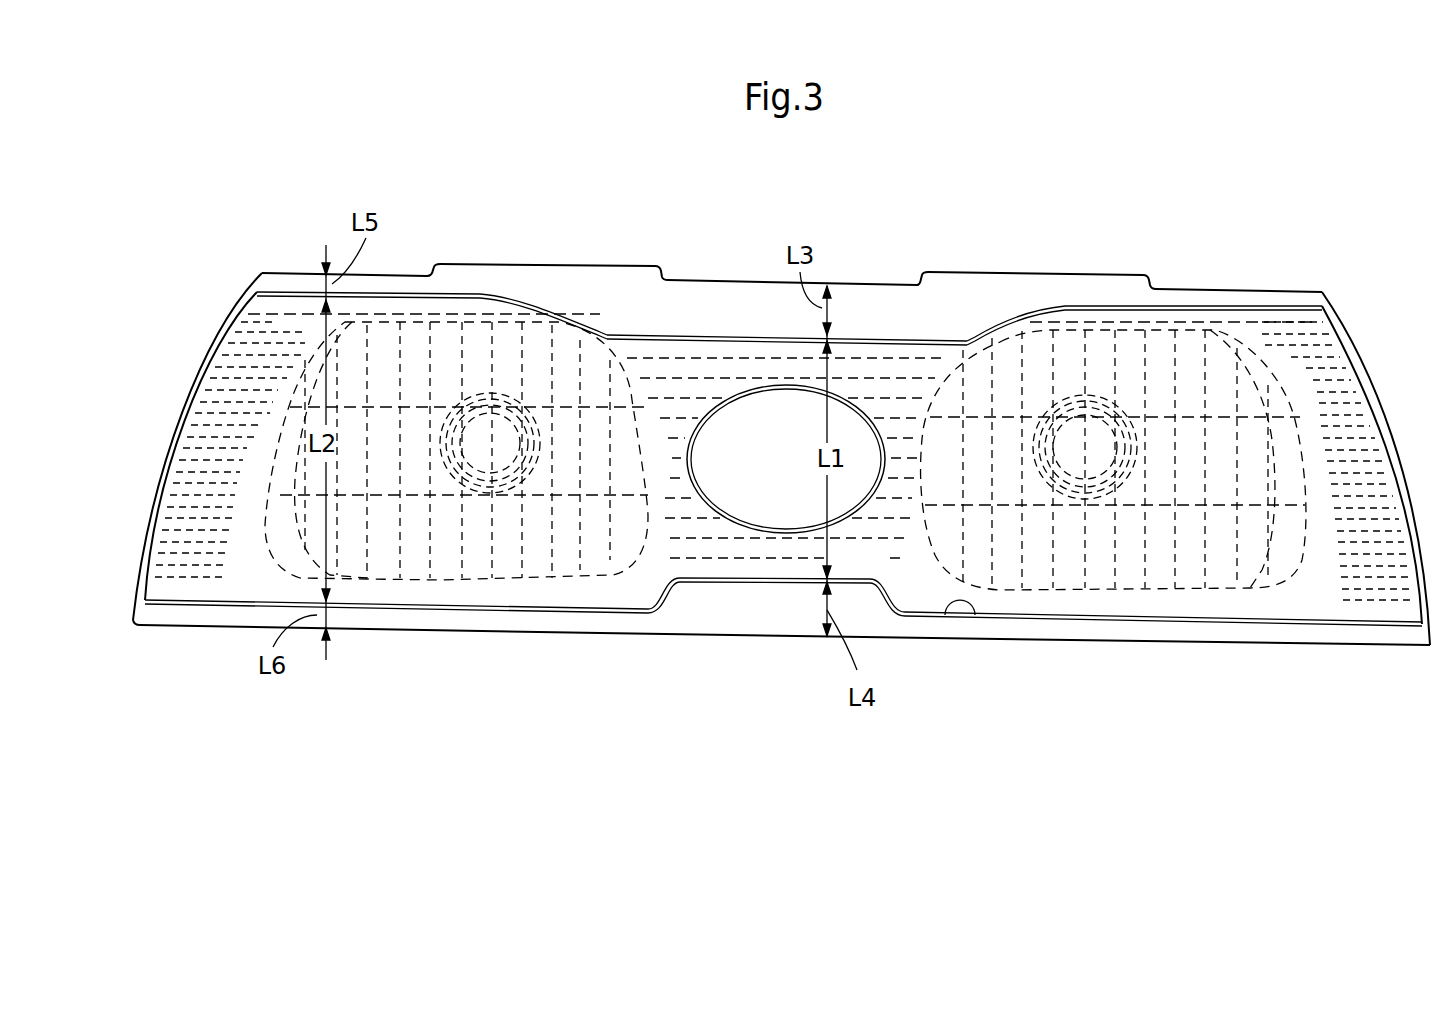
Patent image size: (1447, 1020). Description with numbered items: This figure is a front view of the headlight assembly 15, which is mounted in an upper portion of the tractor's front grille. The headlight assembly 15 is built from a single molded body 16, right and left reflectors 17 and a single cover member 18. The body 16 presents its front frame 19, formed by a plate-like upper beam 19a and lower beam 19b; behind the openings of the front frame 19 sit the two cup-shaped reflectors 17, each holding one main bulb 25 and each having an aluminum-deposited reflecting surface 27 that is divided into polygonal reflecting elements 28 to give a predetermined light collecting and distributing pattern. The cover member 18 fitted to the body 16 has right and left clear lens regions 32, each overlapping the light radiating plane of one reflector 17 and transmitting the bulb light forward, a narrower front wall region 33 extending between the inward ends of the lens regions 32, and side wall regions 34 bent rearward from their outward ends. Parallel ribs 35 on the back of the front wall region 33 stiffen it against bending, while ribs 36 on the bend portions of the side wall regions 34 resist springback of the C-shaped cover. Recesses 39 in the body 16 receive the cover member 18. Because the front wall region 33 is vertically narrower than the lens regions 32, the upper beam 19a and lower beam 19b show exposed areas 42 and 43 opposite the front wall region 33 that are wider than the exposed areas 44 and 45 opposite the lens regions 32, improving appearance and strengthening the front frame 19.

The headlight assembly 15 is at (390, 652).
The body 16 is at (1232, 290).
The reflectors 17 is at (557, 590).
The cover member 18 is at (623, 627).
The front frame 19 is at (760, 280).
The upper beam 19a is at (867, 300).
The lower beam 19b is at (707, 620).
The main bulbs 25 is at (490, 312).
The reflecting surface 27 is at (412, 332).
The reflecting elements 28 is at (578, 332).
The lens regions 32 is at (600, 597).
The front wall region 33 is at (728, 570).
The side wall regions 34 is at (182, 424).
The ribs 35 is at (720, 330).
The ribs 36 is at (240, 300).
The recesses 39 is at (977, 596).
The exposed area 42 is at (891, 282).
The exposed area 43 is at (875, 640).
The exposed area 44 is at (308, 275).
The exposed area 45 is at (248, 627).